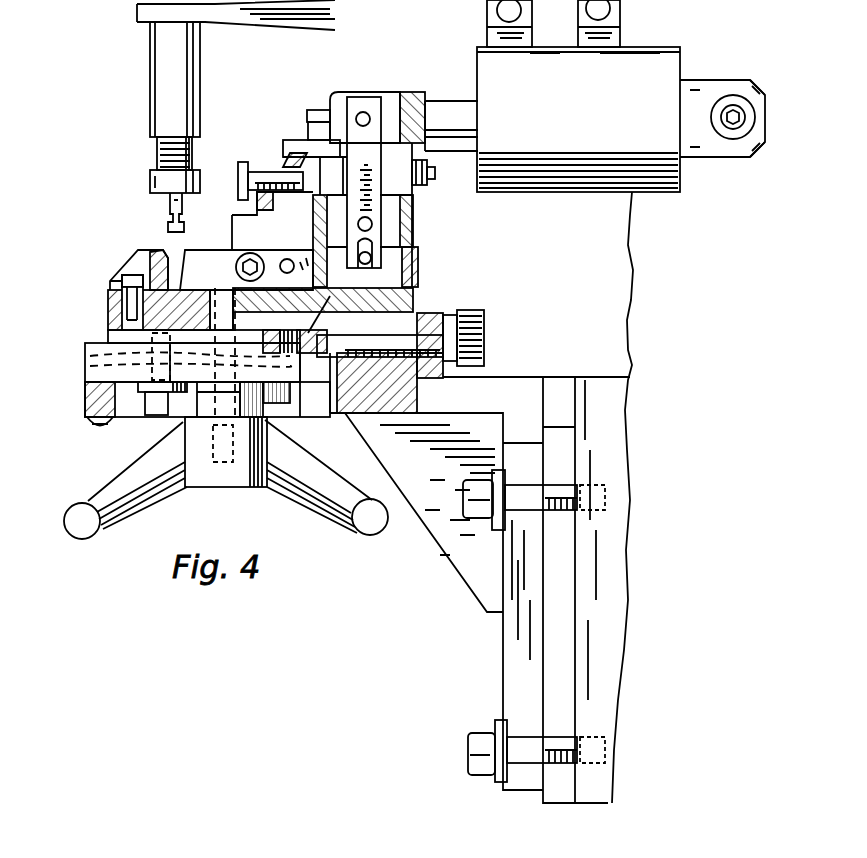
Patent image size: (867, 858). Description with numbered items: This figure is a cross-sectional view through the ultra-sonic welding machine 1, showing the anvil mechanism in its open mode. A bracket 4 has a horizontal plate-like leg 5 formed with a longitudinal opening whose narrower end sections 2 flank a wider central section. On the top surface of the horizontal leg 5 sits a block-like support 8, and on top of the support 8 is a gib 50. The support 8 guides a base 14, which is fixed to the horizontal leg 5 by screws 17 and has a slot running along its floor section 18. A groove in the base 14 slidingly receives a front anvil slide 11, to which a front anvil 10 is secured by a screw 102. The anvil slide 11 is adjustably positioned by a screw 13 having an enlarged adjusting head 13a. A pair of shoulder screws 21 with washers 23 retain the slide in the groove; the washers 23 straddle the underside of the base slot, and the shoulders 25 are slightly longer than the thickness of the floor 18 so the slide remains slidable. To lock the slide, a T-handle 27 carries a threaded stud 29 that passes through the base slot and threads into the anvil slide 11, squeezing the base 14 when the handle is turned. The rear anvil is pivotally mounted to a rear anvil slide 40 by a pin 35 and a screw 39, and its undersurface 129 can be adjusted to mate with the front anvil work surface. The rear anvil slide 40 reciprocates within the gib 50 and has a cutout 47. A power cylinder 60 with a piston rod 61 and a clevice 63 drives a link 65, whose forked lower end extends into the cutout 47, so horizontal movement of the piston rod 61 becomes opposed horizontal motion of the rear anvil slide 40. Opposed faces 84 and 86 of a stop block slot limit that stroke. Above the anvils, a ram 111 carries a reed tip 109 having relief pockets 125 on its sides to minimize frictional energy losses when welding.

The ultra-sonic welding machine 1 is at (56, 500).
The end sections 2 is at (122, 418).
The bracket 4 is at (424, 555).
The horizontal plate-like leg 5 is at (85, 392).
The block-like support 8 is at (418, 297).
The front anvil 10 is at (108, 292).
The front anvil slide 11 is at (283, 352).
The screw 13 is at (430, 335).
The enlarged adjusting head 13a is at (473, 327).
The base 14 is at (377, 383).
The screws 17 is at (95, 425).
The floor section 18 is at (420, 384).
The shoulder screws 21 is at (150, 416).
The washers 23 is at (225, 411).
The shoulders 25 is at (100, 369).
The T-handle 27 is at (168, 488).
The threaded stud 29 is at (125, 315).
The pin 35 is at (287, 259).
The screw 39 is at (250, 254).
The rear anvil slide 40 is at (434, 258).
The cutout 47 is at (398, 272).
The gib 50 is at (422, 210).
The power cylinder 60 is at (660, 47).
The piston rod 61 is at (455, 100).
The clevice 63 is at (414, 92).
The link 65 is at (350, 96).
The face 84 is at (348, 147).
The face 86 is at (362, 182).
The screw 102 is at (125, 276).
The reed tip 109 is at (158, 202).
The ram 111 is at (160, 68).
The relief pocket 125 is at (170, 217).
The undersurface 129 is at (191, 297).